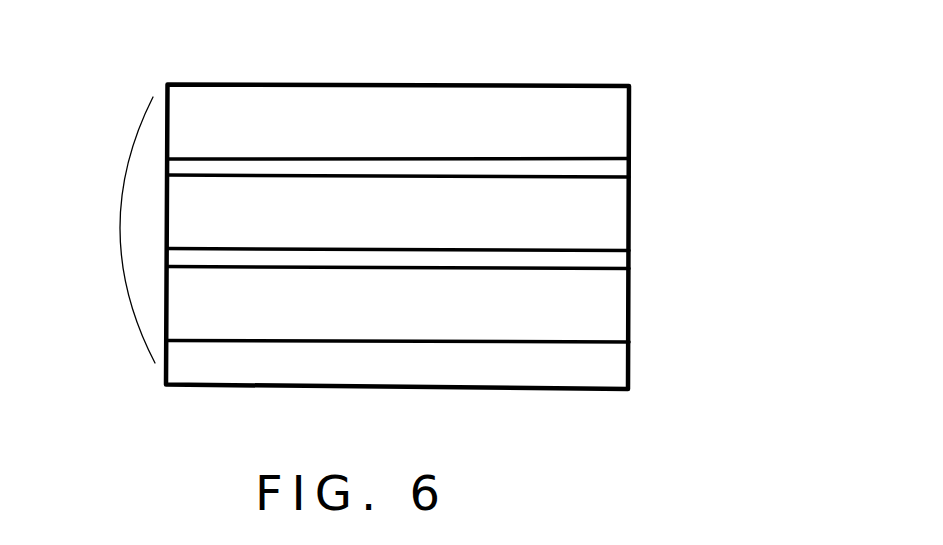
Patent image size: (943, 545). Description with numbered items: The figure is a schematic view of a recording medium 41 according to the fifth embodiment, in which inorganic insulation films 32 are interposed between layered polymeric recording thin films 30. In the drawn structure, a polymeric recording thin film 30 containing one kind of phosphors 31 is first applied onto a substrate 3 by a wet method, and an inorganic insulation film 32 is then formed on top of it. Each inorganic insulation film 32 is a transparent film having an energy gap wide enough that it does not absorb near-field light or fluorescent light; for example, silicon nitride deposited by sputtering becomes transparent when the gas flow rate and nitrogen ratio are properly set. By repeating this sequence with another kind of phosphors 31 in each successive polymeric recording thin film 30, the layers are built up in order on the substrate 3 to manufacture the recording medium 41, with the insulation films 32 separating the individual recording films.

The substrate 3 is at (343, 365).
The polymeric recording thin film 30 is at (595, 127).
The phosphors 31 is at (192, 113).
The inorganic insulation film 32 is at (602, 167).
The recording medium 41 is at (105, 230).